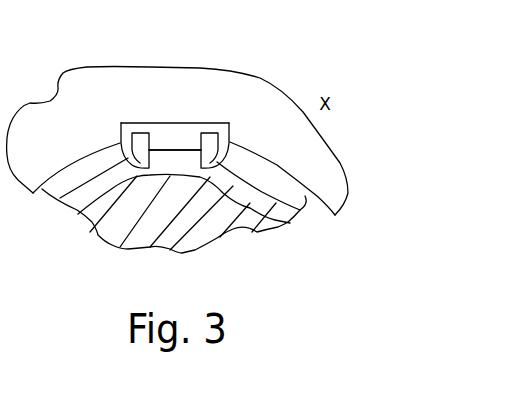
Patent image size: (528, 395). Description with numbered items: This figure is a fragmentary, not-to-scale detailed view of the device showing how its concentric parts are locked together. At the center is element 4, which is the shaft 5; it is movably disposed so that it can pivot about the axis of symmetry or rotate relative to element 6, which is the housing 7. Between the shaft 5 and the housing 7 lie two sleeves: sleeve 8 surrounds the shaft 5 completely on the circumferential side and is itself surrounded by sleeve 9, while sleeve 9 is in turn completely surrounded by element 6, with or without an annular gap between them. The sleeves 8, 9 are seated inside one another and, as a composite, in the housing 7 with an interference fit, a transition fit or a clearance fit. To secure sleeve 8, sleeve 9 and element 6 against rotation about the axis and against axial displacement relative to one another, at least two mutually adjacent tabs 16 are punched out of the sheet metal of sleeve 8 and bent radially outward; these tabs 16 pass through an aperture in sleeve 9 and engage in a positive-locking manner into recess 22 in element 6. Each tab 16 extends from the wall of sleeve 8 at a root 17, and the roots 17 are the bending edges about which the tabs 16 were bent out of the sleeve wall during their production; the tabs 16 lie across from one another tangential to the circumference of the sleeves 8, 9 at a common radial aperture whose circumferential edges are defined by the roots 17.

The element 4 is at (137, 168).
The shaft 5 is at (97, 222).
The element 6 is at (335, 202).
The housing 7 is at (333, 183).
The sleeve 8 is at (230, 196).
The sleeve 9 is at (303, 196).
The tabs 16 is at (133, 131).
The root 17 is at (232, 137).
The recess 22 is at (173, 132).